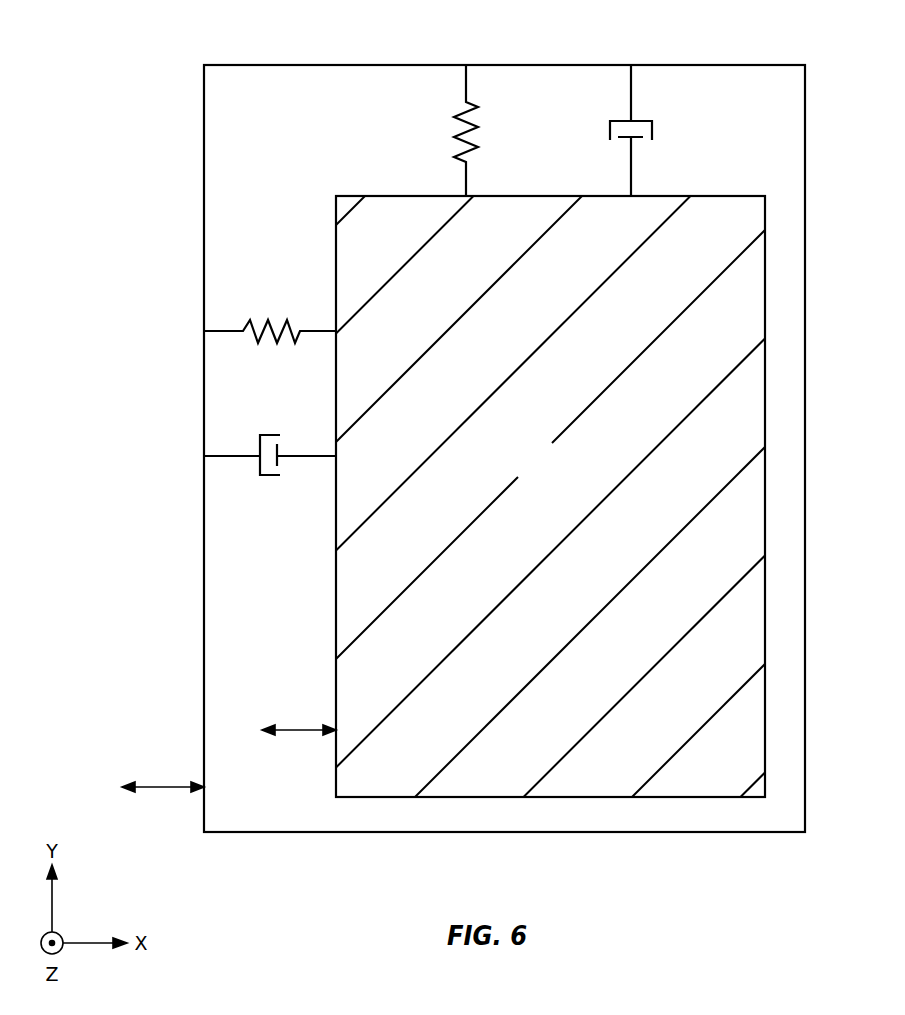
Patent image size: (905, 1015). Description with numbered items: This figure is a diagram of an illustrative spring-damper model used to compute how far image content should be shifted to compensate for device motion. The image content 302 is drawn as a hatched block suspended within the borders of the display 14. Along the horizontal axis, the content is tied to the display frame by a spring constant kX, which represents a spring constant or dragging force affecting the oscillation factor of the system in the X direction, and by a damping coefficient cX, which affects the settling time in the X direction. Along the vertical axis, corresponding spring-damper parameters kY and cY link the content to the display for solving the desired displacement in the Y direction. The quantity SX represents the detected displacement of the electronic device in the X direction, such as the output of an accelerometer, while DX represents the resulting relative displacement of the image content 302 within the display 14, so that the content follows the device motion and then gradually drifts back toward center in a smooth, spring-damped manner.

The display 14 is at (713, 63).
The image content 302 is at (550, 496).
The spring constant in the Y direction kY is at (449, 130).
The damping coefficient in the Y direction cY is at (648, 130).
The spring constant in the X direction kX is at (270, 312).
The damping coefficient in the X direction cX is at (270, 440).
The image content displacement amount DX is at (299, 717).
The detected device displacement in the X direction SX is at (163, 776).